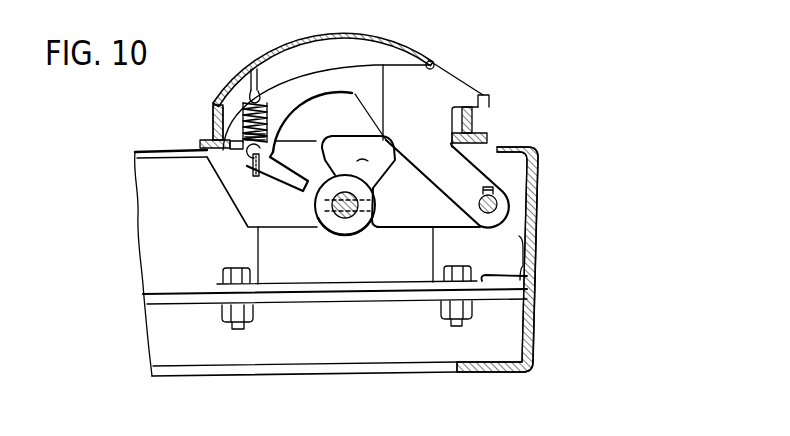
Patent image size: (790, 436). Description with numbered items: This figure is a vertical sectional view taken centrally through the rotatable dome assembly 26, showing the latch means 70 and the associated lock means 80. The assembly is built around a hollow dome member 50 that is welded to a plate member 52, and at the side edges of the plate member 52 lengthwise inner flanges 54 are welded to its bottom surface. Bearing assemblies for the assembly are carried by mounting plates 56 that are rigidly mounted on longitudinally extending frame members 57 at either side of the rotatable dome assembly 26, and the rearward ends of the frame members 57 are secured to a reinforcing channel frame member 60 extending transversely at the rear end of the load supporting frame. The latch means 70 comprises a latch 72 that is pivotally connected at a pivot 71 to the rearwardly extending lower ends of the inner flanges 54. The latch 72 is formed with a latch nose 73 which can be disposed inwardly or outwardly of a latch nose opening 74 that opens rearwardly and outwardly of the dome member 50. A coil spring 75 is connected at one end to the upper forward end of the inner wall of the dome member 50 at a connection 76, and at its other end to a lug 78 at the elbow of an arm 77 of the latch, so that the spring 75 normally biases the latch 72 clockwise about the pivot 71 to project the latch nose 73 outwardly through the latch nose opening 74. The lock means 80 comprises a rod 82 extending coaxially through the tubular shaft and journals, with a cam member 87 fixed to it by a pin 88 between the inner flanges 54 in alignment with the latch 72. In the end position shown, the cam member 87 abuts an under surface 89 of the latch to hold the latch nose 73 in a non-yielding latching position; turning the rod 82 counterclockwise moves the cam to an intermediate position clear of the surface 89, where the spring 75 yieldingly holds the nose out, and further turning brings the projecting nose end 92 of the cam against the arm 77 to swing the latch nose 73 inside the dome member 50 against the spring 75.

The rotatable dome assembly 26 is at (470, 58).
The hollow dome member 50 is at (271, 52).
The plate member 52 is at (484, 134).
The inner flange 54 is at (417, 218).
The mounting plate 56 is at (278, 283).
The frame member 57 is at (283, 298).
The reinforcing channel frame member 60 is at (538, 220).
The latch means 70 is at (322, 172).
The pivot 71 is at (498, 201).
The latch 72 is at (362, 77).
The latch nose 73 is at (479, 97).
The latch nose opening 74 is at (433, 60).
The coil spring 75 is at (242, 123).
The spring connection to dome 76 is at (248, 71).
The arm of the latch 77 is at (272, 184).
The lug at the elbow of the arm 78 is at (253, 172).
The lock means 80 is at (343, 110).
The rod 82 is at (347, 223).
The cam member 87 is at (361, 151).
The pin 88 is at (366, 222).
The under surface of the latch 89 is at (403, 163).
The projecting nose end of the cam 92 is at (323, 137).